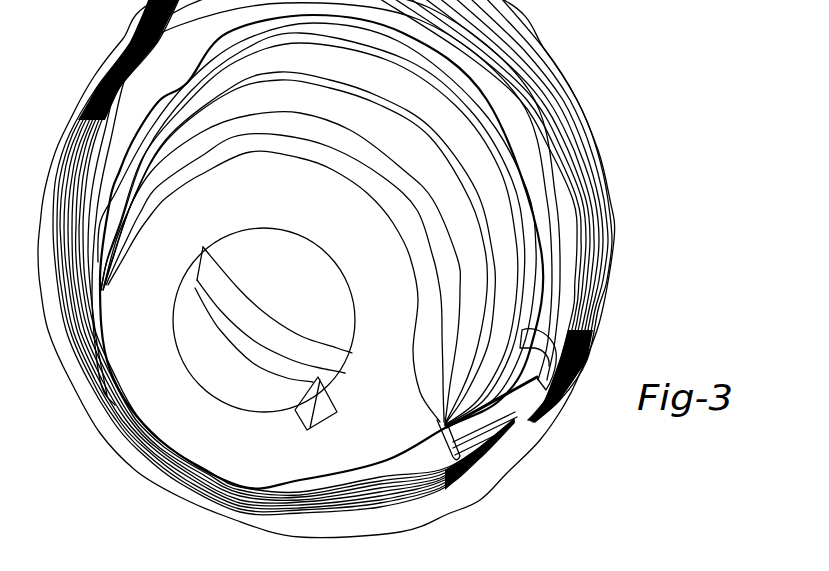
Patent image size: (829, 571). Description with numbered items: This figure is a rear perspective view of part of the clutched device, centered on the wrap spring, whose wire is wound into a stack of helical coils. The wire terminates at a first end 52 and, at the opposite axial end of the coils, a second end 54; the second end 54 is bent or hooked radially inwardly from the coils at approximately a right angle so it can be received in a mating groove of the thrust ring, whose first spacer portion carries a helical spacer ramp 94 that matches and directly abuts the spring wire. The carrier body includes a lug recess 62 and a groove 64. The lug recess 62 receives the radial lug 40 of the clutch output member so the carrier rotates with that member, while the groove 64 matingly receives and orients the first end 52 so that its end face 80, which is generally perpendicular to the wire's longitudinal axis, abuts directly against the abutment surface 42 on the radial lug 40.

The radial lug 40 is at (387, 478).
The abutment surface 42 is at (440, 472).
The first end 52 is at (513, 417).
The second end 54 is at (586, 356).
The lug recess 62 is at (459, 462).
The groove 64 is at (487, 440).
The end face 80 is at (440, 443).
The helical spacer ramp 94 is at (326, 285).